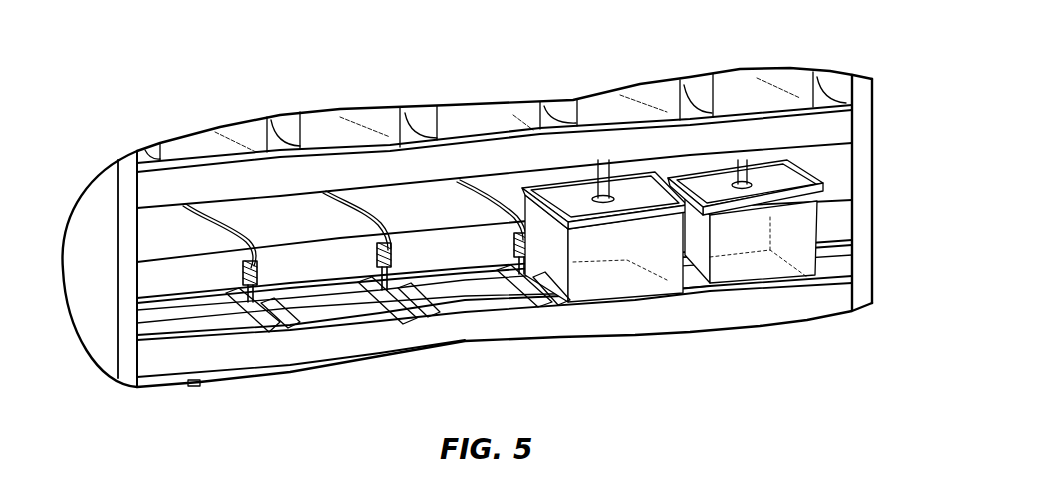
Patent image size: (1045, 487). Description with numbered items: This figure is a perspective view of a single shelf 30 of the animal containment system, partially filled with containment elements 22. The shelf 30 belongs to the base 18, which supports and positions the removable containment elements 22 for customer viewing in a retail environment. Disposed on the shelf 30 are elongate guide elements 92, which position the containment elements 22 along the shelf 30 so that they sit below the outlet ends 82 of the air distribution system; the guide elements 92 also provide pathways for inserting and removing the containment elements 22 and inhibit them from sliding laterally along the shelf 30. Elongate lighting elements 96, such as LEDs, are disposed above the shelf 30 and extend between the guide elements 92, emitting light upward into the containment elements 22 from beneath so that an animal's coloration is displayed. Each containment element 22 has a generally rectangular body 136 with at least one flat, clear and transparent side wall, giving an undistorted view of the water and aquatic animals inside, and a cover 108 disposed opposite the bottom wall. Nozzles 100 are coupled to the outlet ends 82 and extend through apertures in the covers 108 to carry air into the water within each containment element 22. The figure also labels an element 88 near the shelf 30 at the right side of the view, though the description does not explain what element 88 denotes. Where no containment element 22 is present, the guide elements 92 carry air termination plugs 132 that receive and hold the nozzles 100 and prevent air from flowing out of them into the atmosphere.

The base 18 is at (96, 302).
The containment element 22 is at (648, 238).
The shelf 30 is at (809, 313).
The outlet end 82 is at (212, 232).
The upper shelf 88 is at (808, 162).
The guide element 92 is at (289, 300).
The lighting element 96 is at (352, 302).
The nozzle 100 is at (240, 272).
The cover 108 is at (667, 200).
The air termination plug 132 is at (268, 292).
The body 136 is at (617, 285).